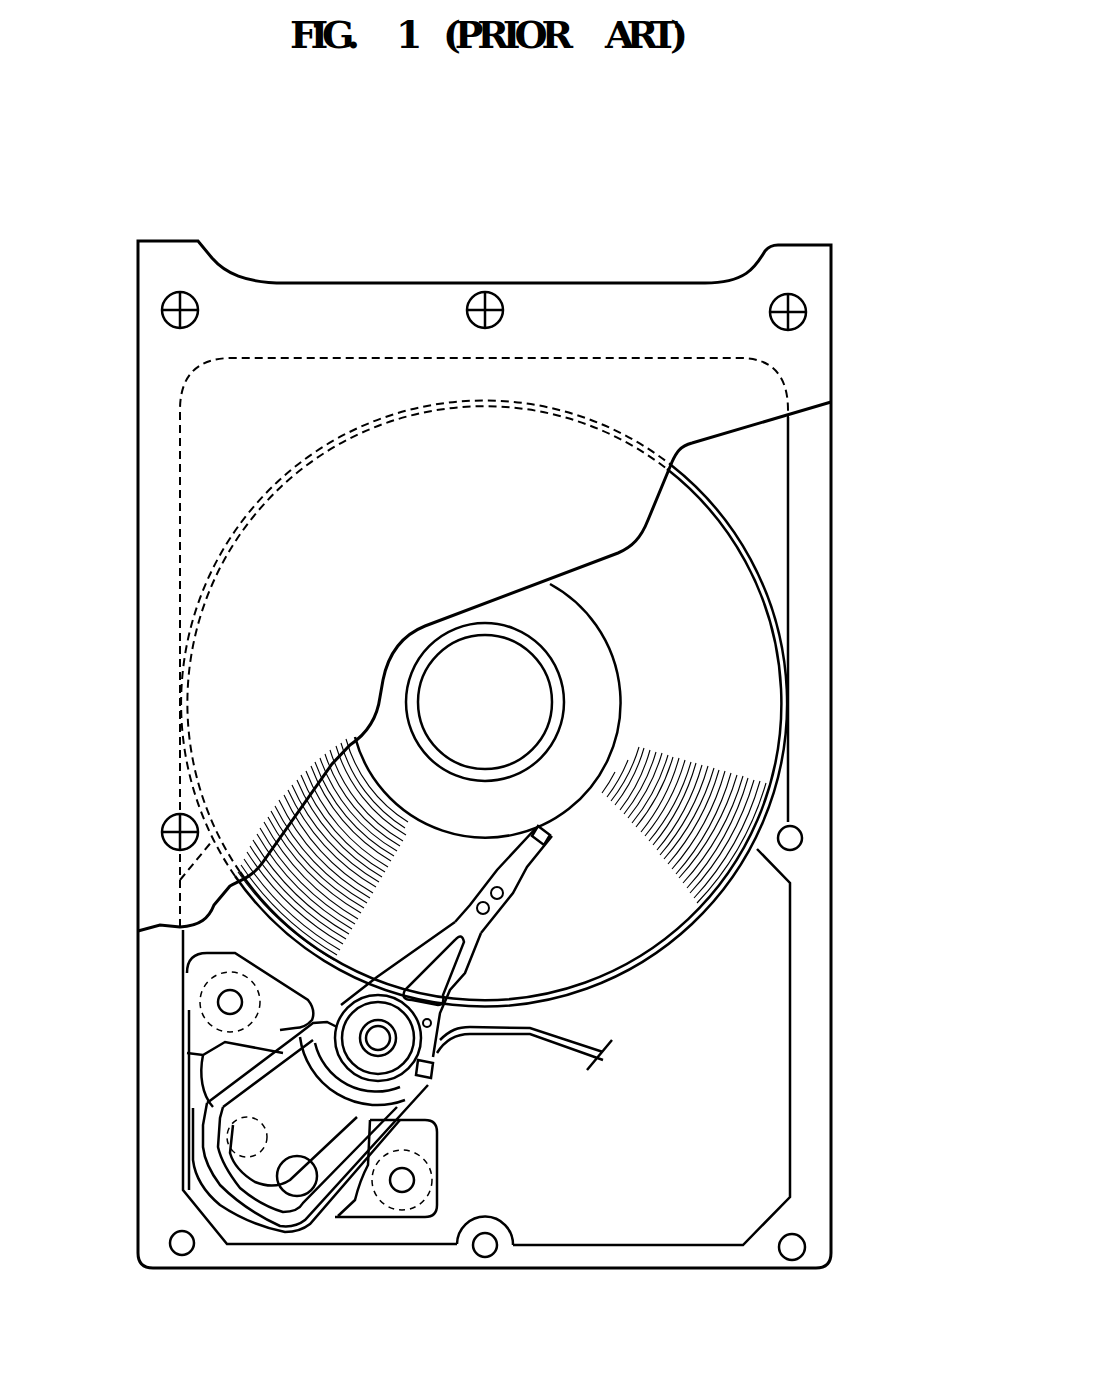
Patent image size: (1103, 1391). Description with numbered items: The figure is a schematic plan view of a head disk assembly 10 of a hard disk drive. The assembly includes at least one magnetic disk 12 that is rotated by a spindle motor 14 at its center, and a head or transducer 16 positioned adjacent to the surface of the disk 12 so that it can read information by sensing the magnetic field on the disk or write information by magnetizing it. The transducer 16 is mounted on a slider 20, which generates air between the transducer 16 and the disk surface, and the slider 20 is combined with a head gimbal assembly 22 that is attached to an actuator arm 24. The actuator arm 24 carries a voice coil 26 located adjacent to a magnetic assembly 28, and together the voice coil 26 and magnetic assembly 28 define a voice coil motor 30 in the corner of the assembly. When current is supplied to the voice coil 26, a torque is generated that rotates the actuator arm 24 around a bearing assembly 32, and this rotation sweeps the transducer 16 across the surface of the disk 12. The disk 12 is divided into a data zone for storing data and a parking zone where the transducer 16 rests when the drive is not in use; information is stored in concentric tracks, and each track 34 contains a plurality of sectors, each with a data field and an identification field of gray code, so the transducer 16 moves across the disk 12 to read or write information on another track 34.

The head disk assembly 10 is at (828, 218).
The magnetic disk 12 is at (740, 639).
The spindle motor 14 is at (458, 678).
The transducer 16 is at (547, 841).
The slider 20 is at (484, 972).
The head gimbal assembly 22 is at (527, 868).
The actuator arm 24 is at (297, 1028).
The voice coil 26 is at (222, 1129).
The magnetic assembly 28 is at (228, 1068).
The voice coil motor 30 is at (350, 1197).
The bearing assembly 32 is at (392, 1050).
The track 34 is at (343, 826).